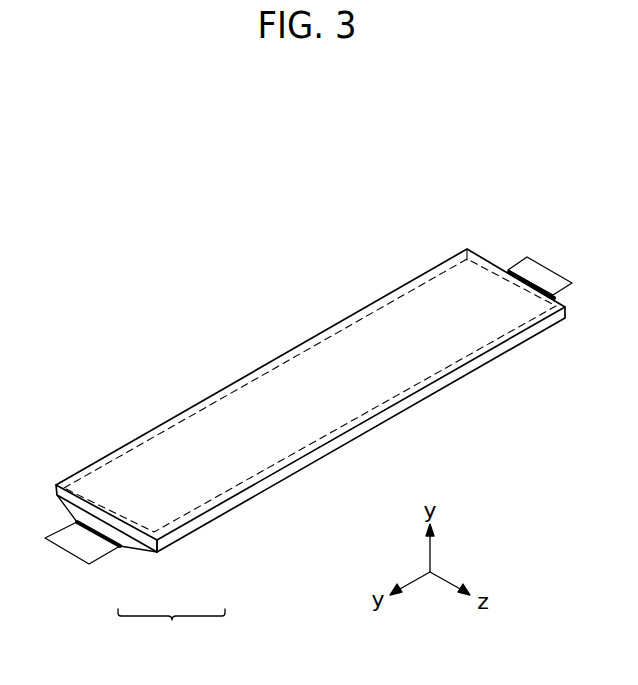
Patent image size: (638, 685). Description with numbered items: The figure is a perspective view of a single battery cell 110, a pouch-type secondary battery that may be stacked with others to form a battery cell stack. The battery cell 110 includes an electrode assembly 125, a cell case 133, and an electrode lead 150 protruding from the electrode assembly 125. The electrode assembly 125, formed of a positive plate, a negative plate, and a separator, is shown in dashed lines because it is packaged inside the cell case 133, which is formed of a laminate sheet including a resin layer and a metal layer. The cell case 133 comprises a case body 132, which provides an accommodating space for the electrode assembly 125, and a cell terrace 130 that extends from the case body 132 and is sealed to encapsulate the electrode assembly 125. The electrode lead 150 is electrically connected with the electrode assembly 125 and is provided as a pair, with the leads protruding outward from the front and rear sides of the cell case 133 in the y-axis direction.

The battery cell 110 is at (231, 358).
The electrode assembly 125 is at (165, 432).
The cell terrace 130 is at (133, 546).
The case body 132 is at (200, 490).
The cell case 133 is at (171, 631).
The electrode lead 150 is at (75, 551).